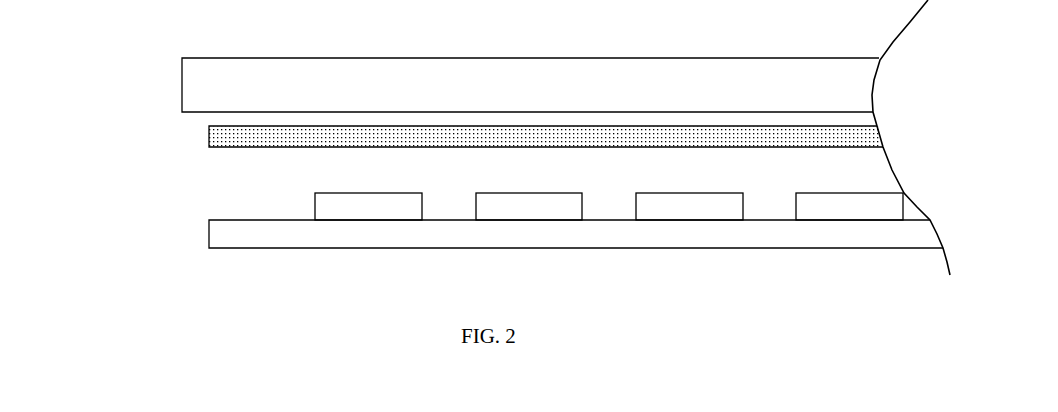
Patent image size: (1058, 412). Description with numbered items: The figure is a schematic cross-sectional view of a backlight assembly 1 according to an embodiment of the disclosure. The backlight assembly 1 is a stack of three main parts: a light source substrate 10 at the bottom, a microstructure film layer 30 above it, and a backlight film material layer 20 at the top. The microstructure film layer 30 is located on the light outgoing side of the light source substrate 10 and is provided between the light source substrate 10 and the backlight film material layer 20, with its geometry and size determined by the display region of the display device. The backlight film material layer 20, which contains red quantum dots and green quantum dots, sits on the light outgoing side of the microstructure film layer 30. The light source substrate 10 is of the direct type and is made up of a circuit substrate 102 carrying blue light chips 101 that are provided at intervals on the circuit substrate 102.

The backlight assembly 1 is at (84, 32).
The backlight film material layer 20 is at (190, 97).
The microstructure film layer 30 is at (208, 133).
The light source substrate 10 is at (112, 167).
The blue light chips 101 is at (340, 207).
The circuit substrate 102 is at (263, 235).